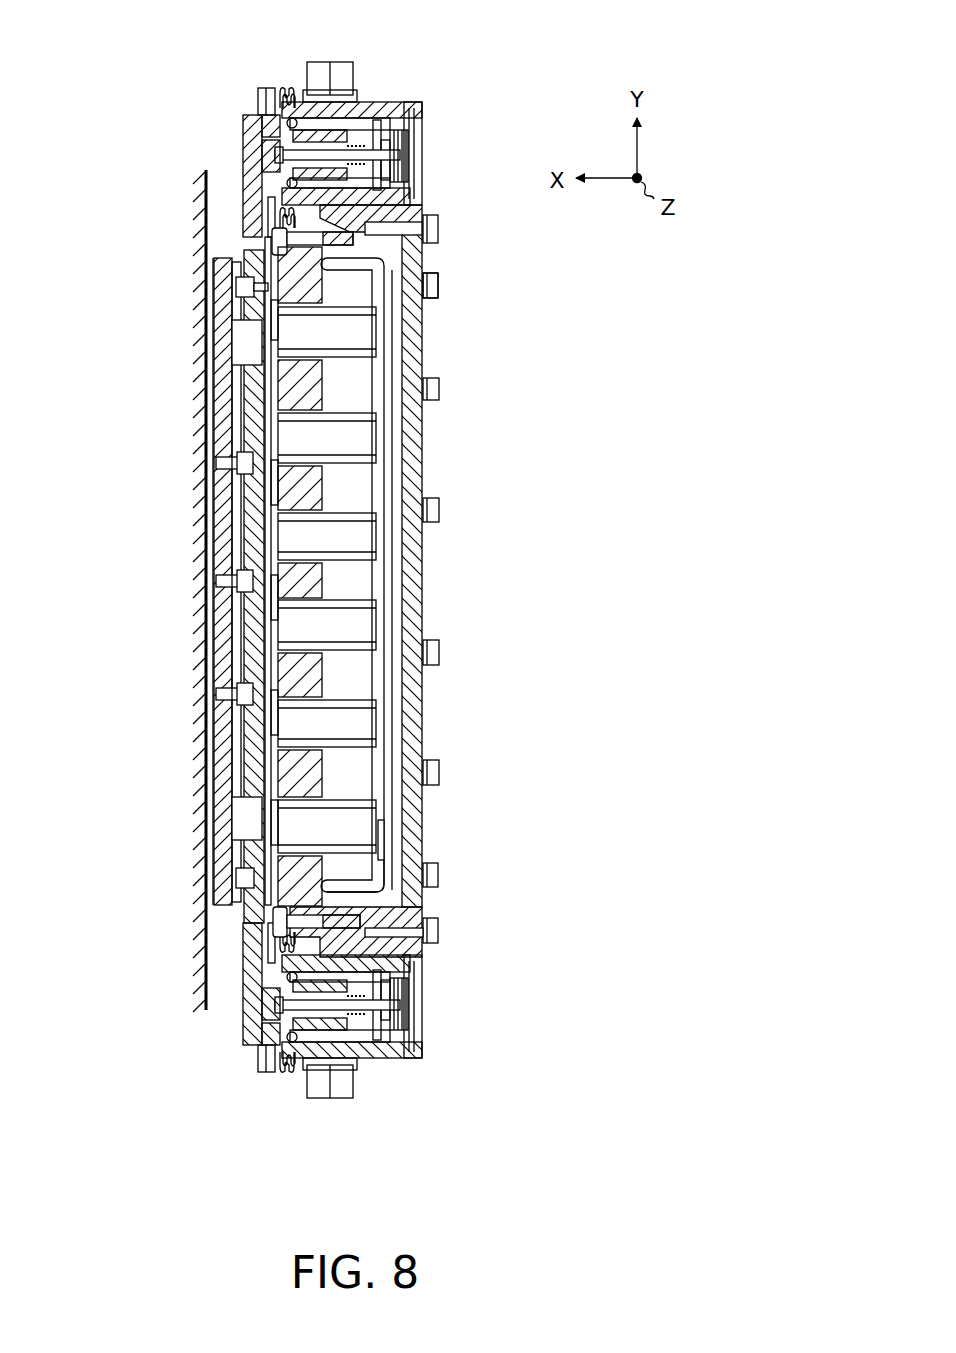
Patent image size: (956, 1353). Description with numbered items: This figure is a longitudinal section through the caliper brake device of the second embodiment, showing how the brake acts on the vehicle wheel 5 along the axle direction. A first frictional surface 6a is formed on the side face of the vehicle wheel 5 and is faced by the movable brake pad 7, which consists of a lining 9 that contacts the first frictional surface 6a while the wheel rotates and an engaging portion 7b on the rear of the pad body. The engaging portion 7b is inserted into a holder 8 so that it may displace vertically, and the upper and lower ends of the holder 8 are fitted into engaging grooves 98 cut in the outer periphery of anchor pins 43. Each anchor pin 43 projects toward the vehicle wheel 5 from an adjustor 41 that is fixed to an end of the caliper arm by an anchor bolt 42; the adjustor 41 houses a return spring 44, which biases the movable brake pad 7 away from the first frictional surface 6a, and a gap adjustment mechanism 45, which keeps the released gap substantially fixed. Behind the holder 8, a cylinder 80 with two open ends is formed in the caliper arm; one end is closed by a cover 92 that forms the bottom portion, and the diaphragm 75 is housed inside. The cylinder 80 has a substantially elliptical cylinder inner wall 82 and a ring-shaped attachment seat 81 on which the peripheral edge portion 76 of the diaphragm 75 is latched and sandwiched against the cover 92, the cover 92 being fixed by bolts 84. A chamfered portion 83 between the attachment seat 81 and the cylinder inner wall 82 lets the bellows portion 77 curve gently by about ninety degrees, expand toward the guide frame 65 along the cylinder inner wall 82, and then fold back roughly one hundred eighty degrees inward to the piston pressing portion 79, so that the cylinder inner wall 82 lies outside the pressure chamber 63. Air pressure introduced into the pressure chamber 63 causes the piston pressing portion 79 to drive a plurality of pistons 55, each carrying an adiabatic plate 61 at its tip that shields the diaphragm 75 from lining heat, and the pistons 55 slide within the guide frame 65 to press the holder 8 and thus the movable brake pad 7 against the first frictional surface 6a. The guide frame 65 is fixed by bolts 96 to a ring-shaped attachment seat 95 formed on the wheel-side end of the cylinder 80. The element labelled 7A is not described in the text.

The vehicle wheel 5 is at (102, 538).
The first frictional surface 6a is at (208, 923).
The movable brake pad 7 is at (208, 615).
The protrusion of base plate 7A is at (210, 338).
The engaging portion 7b is at (245, 240).
The holder 8 is at (237, 768).
The lining 9 is at (217, 440).
The adjustor 41 is at (387, 102).
The anchor bolt 42 is at (338, 73).
The anchor pin 43 is at (252, 115).
The return spring 44 is at (423, 123).
The gap adjustment mechanism 45 is at (380, 172).
The piston 55 is at (353, 710).
The adiabatic plate 61 is at (237, 728).
The pressure chamber 63 is at (393, 687).
The guide frame 65 is at (317, 482).
The diaphragm 75 is at (510, 810).
The peripheral edge portion 76 is at (393, 908).
The bellows portion 77 is at (347, 892).
The piston pressing portion 79 is at (380, 832).
The cylinder 80 is at (512, 230).
The attachment seat 81 is at (438, 246).
The cylinder inner wall 82 is at (438, 296).
The chamfered portion 83 is at (423, 268).
The bolt 84 is at (439, 508).
The cover 92 is at (415, 602).
The attachment seat 95 is at (262, 228).
The bolt 96 is at (250, 247).
The engaging groove 98 is at (257, 198).